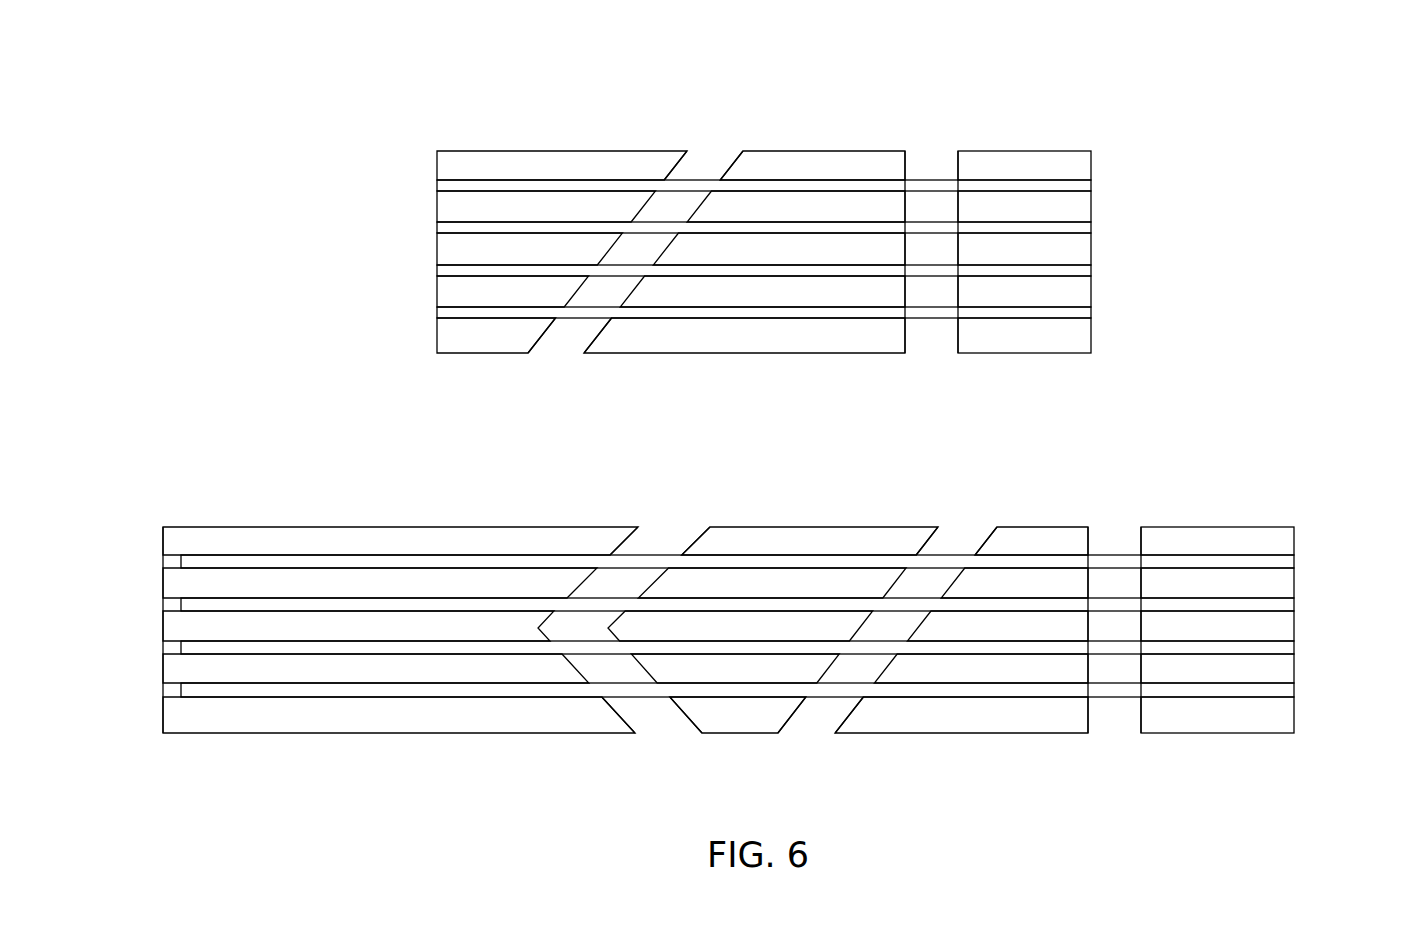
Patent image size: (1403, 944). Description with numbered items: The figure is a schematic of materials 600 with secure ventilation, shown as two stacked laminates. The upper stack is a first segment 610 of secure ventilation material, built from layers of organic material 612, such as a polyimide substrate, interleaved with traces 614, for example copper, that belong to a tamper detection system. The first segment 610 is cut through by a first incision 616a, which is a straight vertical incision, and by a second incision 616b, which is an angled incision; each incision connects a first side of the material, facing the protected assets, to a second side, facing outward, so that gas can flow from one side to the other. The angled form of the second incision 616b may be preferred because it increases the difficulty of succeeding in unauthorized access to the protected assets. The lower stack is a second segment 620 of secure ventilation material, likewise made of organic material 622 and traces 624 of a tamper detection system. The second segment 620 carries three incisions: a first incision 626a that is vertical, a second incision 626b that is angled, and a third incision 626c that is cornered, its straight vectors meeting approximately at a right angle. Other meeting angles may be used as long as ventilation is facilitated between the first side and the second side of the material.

The schematic of materials 600 is at (190, 80).
The first segment 610 is at (424, 253).
The organic material 612 is at (1080, 207).
The traces 614 is at (1085, 230).
The first incision 616a is at (938, 140).
The second incision 616b is at (710, 150).
The second segment 620 is at (152, 627).
The organic material 622 is at (1282, 543).
The traces 624 is at (1287, 607).
The first incision 626a is at (1116, 515).
The second incision 626b is at (960, 522).
The third incision 626c is at (672, 522).